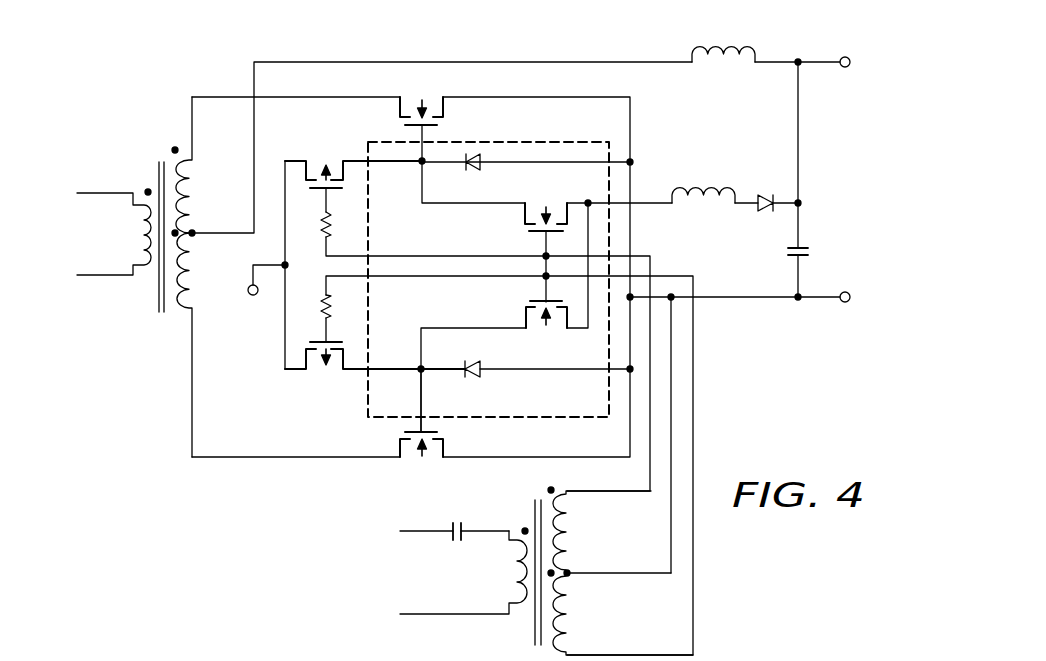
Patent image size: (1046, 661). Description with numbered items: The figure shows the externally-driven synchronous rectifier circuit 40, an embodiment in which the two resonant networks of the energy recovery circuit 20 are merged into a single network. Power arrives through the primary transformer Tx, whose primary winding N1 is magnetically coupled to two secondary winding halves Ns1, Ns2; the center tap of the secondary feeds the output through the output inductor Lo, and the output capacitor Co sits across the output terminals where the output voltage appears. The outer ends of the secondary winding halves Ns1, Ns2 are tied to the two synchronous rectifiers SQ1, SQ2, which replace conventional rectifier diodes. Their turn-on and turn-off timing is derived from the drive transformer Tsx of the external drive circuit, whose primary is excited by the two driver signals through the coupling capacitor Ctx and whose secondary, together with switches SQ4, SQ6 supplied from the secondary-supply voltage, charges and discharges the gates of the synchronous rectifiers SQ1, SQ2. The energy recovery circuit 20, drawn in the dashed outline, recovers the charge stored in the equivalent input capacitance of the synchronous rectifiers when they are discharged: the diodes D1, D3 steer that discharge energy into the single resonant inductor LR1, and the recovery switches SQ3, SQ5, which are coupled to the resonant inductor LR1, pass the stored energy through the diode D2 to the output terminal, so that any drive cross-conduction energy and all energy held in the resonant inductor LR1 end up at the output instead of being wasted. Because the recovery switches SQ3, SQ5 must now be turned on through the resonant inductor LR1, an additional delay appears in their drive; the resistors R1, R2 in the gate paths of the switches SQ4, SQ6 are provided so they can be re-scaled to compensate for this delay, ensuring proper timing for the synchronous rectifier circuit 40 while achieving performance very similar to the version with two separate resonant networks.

The synchronous rectifier circuit 40 is at (213, 534).
The energy recovery circuit 20 is at (584, 407).
The primary transformer Tx is at (152, 277).
The primary winding N1 is at (114, 232).
The secondary winding Ns1 is at (202, 165).
The secondary winding Ns2 is at (200, 343).
The synchronous rectifier SQ1 is at (462, 137).
The synchronous rectifier SQ2 is at (421, 426).
The recovery switch SQ3 is at (546, 239).
The switch SQ4 is at (353, 172).
The recovery switch SQ5 is at (494, 366).
The switch SQ6 is at (375, 369).
The diode D1 is at (475, 173).
The diode D2 is at (766, 191).
The diode D3 is at (475, 356).
The resistor R1 is at (314, 224).
The resistor R2 is at (314, 307).
The output inductor Lo is at (723, 40).
The resonant inductor LR1 is at (703, 180).
The output capacitor Co is at (783, 250).
The transformer Tsx is at (546, 562).
The coupling capacitor Ctx is at (456, 518).